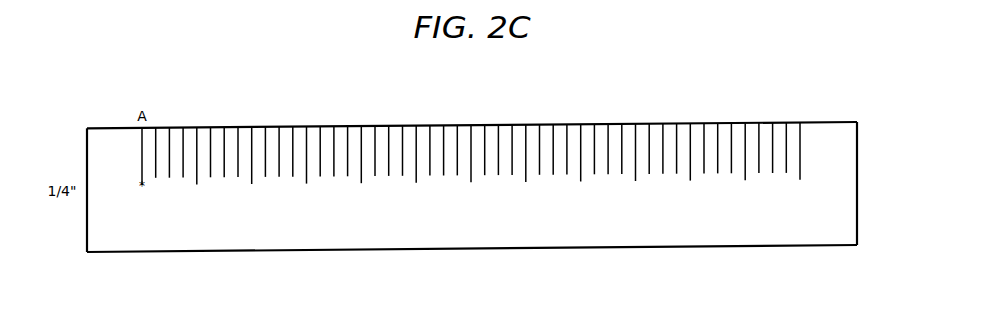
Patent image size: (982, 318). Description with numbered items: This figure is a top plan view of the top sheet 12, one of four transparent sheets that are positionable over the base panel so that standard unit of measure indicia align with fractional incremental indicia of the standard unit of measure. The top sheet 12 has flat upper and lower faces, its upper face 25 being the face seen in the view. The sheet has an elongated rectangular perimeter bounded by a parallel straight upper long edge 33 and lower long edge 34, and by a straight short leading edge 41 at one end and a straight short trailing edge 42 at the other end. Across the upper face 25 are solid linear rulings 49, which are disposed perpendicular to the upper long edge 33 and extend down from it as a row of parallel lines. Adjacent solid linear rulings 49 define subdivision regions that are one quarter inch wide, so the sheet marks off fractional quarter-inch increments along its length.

The top sheet 12 is at (107, 221).
The upper face 25 is at (819, 221).
The upper long edge 33 is at (737, 122).
The lower long edge 34 is at (668, 247).
The leading edge 41 is at (87, 151).
The trailing edge 42 is at (857, 152).
The solid linear rulings 49 is at (525, 176).